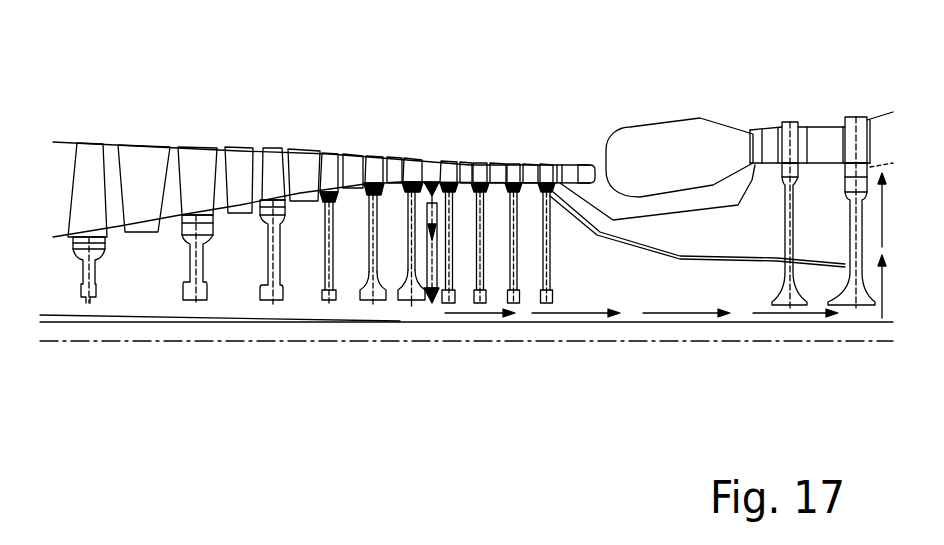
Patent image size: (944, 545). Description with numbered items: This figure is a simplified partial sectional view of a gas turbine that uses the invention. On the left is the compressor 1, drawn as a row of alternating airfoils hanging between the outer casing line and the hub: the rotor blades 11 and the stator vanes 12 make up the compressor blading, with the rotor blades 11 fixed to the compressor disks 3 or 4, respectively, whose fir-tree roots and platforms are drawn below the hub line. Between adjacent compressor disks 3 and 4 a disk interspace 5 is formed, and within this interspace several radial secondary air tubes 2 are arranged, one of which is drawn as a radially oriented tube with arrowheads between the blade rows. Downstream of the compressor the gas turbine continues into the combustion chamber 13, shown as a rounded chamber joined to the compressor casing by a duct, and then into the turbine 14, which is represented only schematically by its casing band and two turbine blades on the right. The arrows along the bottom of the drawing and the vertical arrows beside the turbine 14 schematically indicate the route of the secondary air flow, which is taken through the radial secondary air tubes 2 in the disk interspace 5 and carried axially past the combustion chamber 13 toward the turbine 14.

The compressor 1 is at (476, 105).
The secondary air tube 2 is at (437, 266).
The compressor disk 3 is at (415, 293).
The compressor disk 4 is at (447, 312).
The disk interspace 5 is at (401, 301).
The rotor blades 11 is at (407, 163).
The stator vanes 12 is at (303, 160).
The combustion chamber 13 is at (667, 138).
The turbine 14 is at (826, 99).